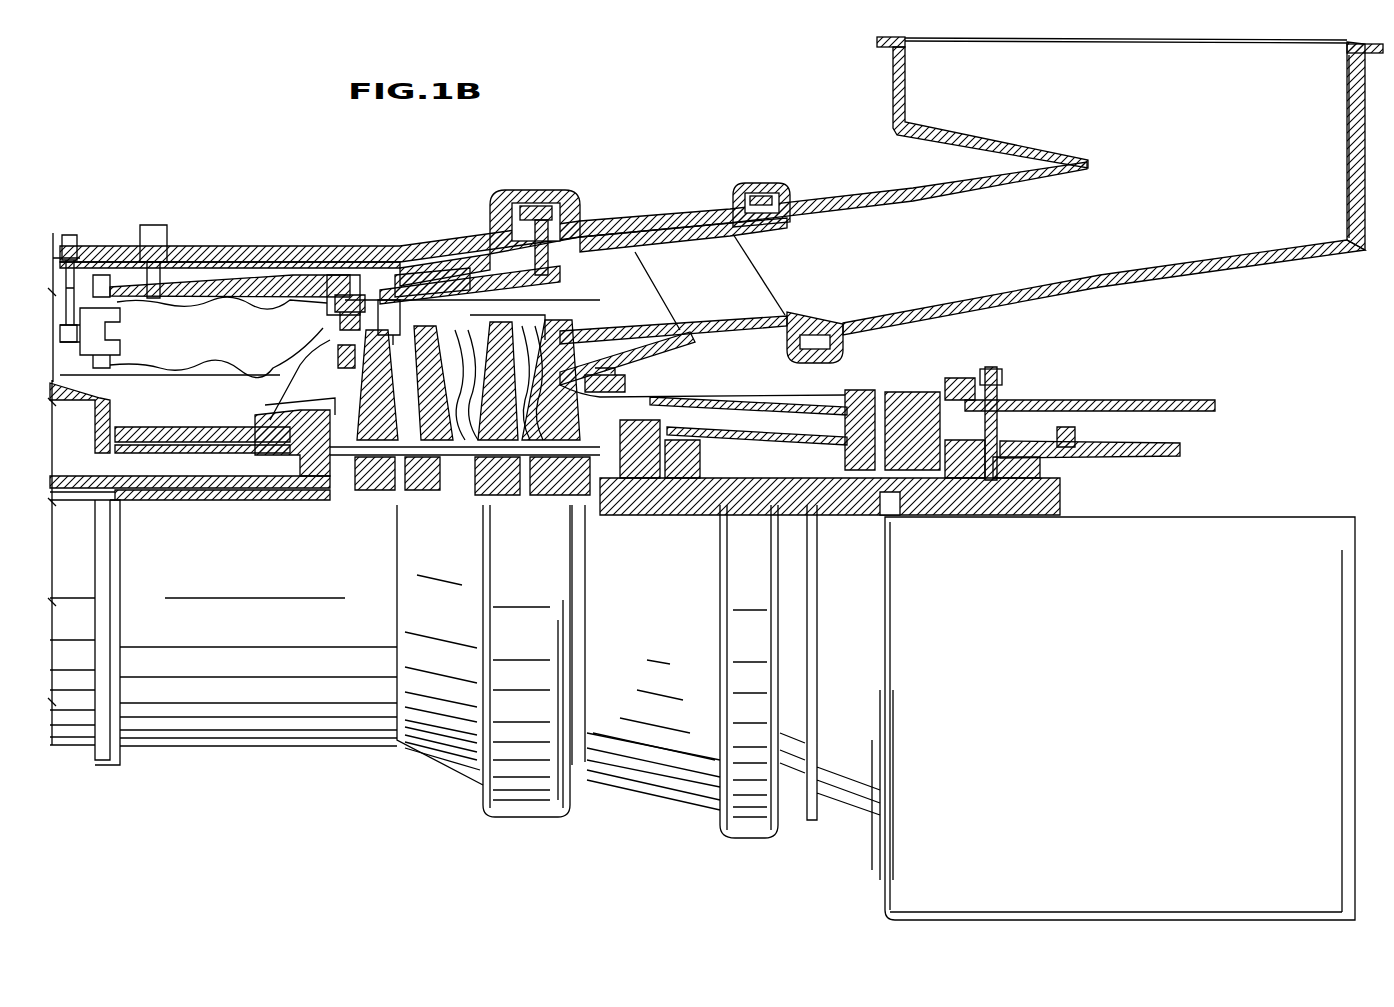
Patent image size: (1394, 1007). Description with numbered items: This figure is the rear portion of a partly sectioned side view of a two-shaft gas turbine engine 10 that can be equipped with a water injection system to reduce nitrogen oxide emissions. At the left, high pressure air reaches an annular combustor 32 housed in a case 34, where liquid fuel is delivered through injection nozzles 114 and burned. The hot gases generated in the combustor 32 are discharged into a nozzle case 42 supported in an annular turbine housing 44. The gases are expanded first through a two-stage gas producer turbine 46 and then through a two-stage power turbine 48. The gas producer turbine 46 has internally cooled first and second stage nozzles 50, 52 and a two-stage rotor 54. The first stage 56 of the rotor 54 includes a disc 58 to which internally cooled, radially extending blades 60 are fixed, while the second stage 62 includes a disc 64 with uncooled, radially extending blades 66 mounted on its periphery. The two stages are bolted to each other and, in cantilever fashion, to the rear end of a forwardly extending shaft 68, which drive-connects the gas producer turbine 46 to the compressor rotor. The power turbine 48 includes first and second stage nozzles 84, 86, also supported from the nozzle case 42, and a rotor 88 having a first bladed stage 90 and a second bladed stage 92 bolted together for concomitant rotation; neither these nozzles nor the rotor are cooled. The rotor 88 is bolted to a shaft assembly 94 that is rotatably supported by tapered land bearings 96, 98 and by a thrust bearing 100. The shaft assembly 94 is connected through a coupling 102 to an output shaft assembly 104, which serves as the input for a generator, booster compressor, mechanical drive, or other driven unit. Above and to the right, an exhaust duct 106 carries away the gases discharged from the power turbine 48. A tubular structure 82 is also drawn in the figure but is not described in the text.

The gas turbine engine 10 is at (214, 200).
The combustor 32 is at (190, 378).
The case 34 is at (306, 262).
The nozzle case 42 is at (470, 276).
The turbine housing 44 is at (488, 262).
The gas producer turbine 46 is at (340, 380).
The power turbine 48 is at (650, 388).
The first stage nozzle 50 is at (330, 317).
The second stage nozzle 52 is at (395, 300).
The two-stage rotor 54 is at (400, 495).
The first stage 56 is at (378, 495).
The disc 58 is at (364, 408).
The blades 60 is at (372, 300).
The second stage 62 is at (447, 500).
The disc 64 is at (415, 422).
The blades 66 is at (430, 300).
The shaft 68 is at (180, 474).
The shaft tube 82 is at (290, 497).
The first stage nozzle 84 is at (548, 287).
The second stage nozzle 86 is at (545, 316).
The rotor 88 is at (524, 507).
The first bladed stage 90 is at (503, 505).
The second bladed stage 92 is at (585, 507).
The shaft assembly 94 is at (797, 478).
The tapered land bearing 96 is at (662, 472).
The tapered land bearing 98 is at (958, 492).
The thrust bearing 100 is at (895, 492).
The coupling 102 is at (947, 380).
The output shaft assembly 104 is at (1175, 400).
The exhaust duct 106 is at (1018, 40).
The injection nozzles 114 is at (68, 235).